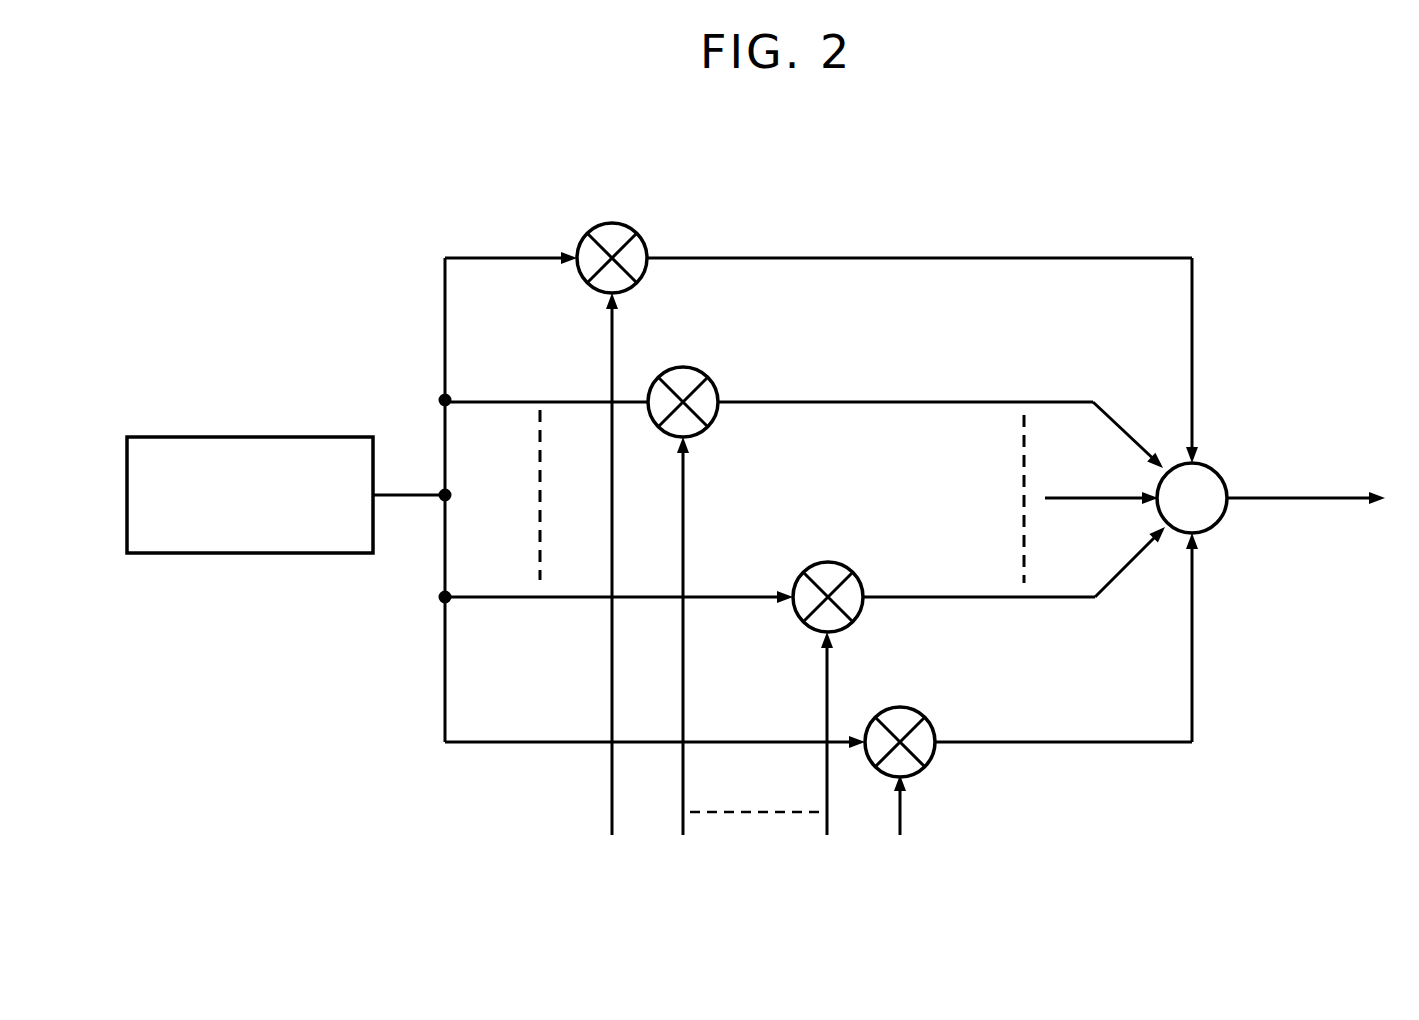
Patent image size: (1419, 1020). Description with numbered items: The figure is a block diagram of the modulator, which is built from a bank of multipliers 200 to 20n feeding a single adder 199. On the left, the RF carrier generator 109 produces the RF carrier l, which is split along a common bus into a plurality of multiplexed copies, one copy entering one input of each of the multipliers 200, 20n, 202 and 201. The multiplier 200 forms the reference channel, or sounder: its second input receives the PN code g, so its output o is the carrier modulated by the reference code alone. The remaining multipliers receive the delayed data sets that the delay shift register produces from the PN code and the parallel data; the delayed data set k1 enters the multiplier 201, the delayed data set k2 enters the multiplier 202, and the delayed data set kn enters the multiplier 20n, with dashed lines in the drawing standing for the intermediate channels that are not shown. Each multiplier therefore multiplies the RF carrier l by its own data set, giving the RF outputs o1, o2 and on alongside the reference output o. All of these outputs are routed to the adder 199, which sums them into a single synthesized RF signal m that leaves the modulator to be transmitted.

The RF carrier generator 109 is at (226, 440).
The multiplier 200 is at (612, 228).
The multiplier 20n is at (692, 372).
The multiplier 202 is at (838, 562).
The multiplier 201 is at (905, 680).
The adder 199 is at (1207, 464).
The RF carrier l is at (445, 655).
The PN code g is at (612, 662).
The delayed data set kn is at (683, 794).
The delayed data set k2 is at (827, 686).
The delayed data set k1 is at (900, 818).
The multiplier output o is at (988, 258).
The multiplier output on is at (952, 402).
The multiplier output o2 is at (1112, 583).
The multiplier output o1 is at (1110, 742).
The RF signal to be transmitted m is at (1296, 498).